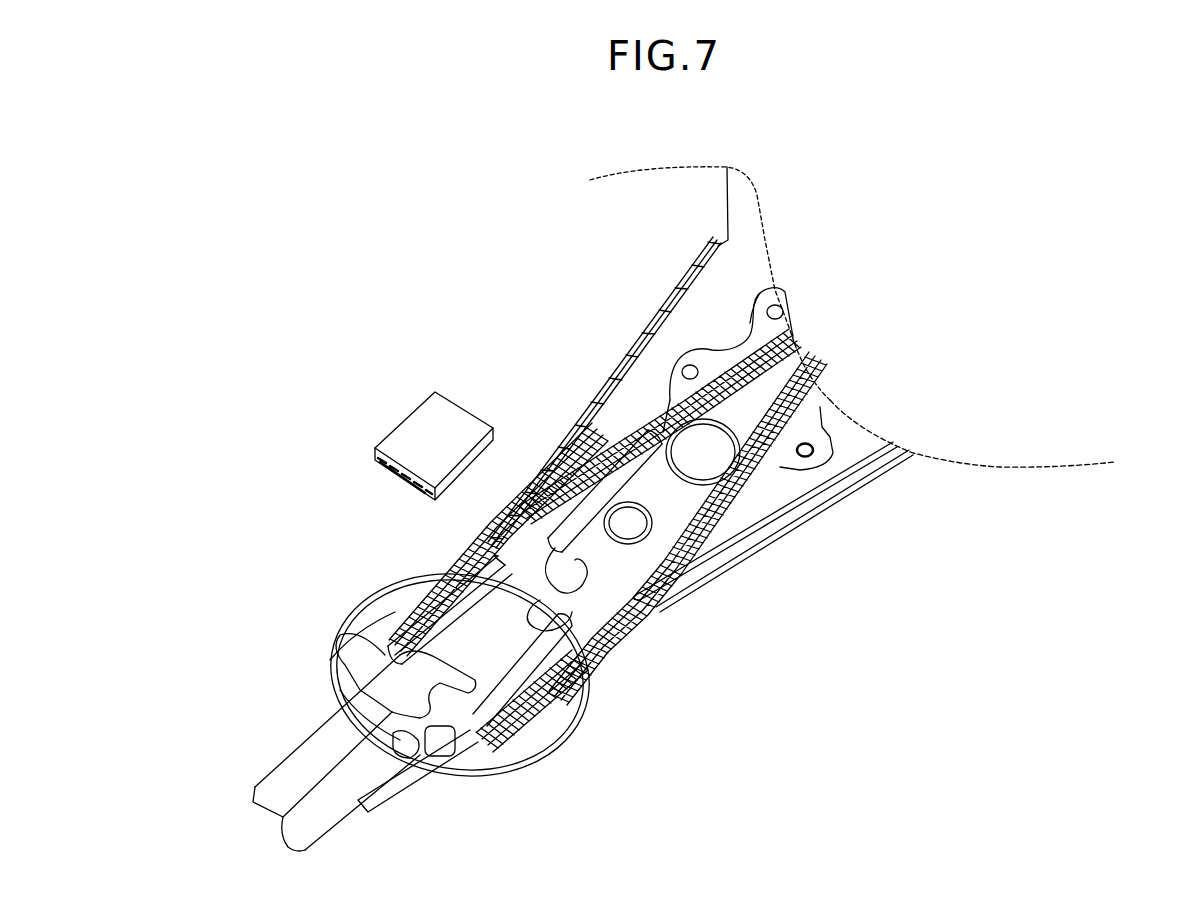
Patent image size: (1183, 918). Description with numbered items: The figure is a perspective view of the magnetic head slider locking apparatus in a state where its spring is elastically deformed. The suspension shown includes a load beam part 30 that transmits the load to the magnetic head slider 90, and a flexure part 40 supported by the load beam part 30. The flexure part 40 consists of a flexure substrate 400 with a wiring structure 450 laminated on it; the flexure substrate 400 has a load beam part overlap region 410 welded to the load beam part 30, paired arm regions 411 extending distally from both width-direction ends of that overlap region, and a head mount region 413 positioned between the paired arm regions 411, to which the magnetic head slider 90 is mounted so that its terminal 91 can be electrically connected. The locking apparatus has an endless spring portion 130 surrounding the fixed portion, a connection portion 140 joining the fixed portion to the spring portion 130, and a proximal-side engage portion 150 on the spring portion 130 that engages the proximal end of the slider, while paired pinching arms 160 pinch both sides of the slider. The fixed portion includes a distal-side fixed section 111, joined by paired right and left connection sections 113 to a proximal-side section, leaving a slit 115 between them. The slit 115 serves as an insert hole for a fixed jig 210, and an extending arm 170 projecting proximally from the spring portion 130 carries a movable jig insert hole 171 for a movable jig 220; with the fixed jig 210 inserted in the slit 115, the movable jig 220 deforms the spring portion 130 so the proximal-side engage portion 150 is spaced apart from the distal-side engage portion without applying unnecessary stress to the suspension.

The load beam part 30 is at (858, 517).
The flexure part 40 is at (838, 598).
The flexure substrate 400 is at (777, 457).
The wiring structure 450 is at (733, 487).
The load beam part overlap region 410 is at (713, 358).
The paired arm regions 411 is at (496, 547).
The movable jig 220 is at (603, 494).
The magnetic head slider 90 is at (394, 396).
The terminal 91 is at (378, 463).
The endless spring portion 130 is at (588, 717).
The paired pinching arms 160 is at (407, 617).
The proximal-side engage portion 150 is at (457, 587).
The extending arm 170 is at (585, 626).
The movable jig insert hole 171 is at (588, 588).
The head mount region 413 is at (497, 669).
The paired right and left connection sections 113 is at (487, 750).
The distal-side fixed section 111 is at (442, 757).
The slit 115 is at (400, 758).
The connection portion 140 is at (390, 805).
The fixed jig 210 is at (257, 765).